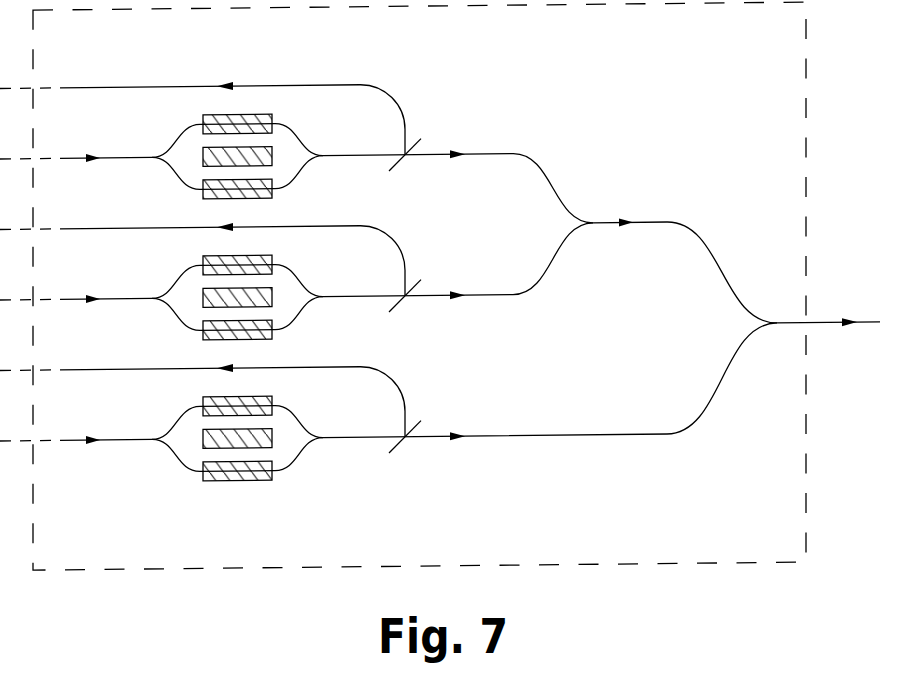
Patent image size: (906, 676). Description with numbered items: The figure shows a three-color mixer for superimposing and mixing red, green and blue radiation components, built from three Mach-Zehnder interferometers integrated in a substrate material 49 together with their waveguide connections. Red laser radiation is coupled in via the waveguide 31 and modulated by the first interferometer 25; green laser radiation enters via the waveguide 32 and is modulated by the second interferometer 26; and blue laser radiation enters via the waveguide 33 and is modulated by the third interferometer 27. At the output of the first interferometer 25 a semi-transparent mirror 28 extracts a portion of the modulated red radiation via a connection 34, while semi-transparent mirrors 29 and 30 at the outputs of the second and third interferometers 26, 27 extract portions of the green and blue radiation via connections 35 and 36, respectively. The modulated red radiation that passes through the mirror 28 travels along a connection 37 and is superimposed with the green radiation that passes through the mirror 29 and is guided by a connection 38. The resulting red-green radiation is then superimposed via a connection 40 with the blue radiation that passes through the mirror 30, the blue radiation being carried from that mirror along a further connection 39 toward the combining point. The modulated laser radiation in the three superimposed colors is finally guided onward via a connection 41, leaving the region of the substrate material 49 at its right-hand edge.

The first interferometer 25 is at (315, 113).
The second interferometer 26 is at (313, 251).
The third interferometer 27 is at (264, 500).
The semi-transparent mirror 28 is at (398, 166).
The semi-transparent mirror 29 is at (398, 306).
The semi-transparent mirror 30 is at (398, 449).
The waveguide 31 is at (72, 158).
The waveguide 32 is at (72, 300).
The waveguide 33 is at (75, 446).
The connection 34 is at (137, 88).
The connection 35 is at (97, 230).
The connection 36 is at (88, 370).
The connection (waveguide) 37 is at (432, 156).
The connection 38 is at (432, 296).
The third connecting waveguide 39 is at (548, 439).
The connection 40 is at (607, 226).
The connection 41 is at (823, 331).
The substrate material 49 is at (155, 563).